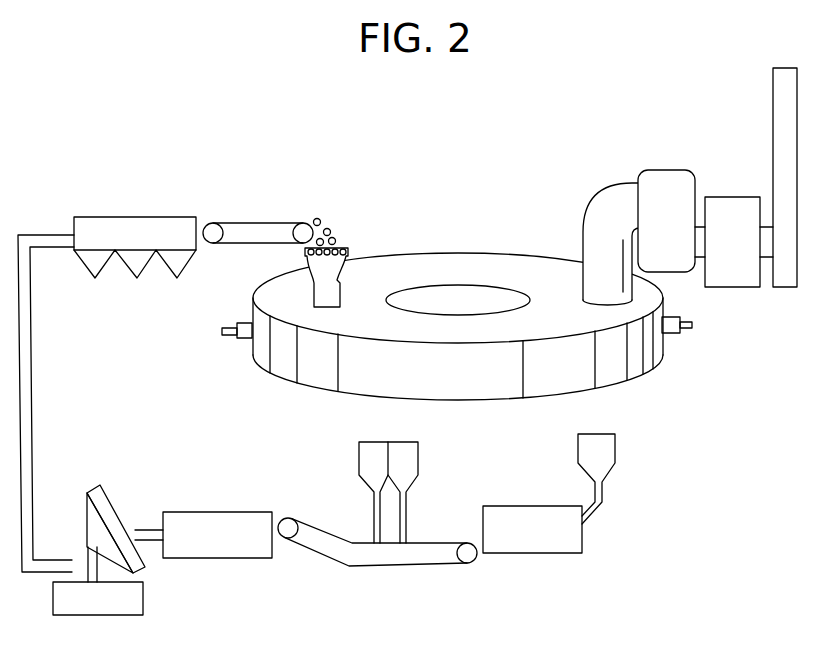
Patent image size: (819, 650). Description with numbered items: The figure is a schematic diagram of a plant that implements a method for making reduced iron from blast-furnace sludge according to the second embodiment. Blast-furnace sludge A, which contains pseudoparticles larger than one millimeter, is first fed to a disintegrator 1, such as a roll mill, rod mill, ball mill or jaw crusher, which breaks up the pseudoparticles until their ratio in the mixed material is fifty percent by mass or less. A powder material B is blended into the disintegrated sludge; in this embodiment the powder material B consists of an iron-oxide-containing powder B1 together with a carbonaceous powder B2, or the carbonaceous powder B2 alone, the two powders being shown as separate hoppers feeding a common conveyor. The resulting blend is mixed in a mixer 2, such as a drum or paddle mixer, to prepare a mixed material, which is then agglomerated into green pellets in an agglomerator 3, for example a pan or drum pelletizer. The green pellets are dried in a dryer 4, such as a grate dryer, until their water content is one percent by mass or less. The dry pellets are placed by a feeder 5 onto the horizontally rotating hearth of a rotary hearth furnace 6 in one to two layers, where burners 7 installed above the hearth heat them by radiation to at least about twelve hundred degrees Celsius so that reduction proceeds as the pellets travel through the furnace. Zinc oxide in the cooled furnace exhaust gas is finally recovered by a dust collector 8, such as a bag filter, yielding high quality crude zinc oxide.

The disintegrator 1 is at (557, 547).
The mixer 2 is at (248, 553).
The agglomerator 3 is at (137, 603).
The dryer 4 is at (160, 220).
The feeder 5 is at (350, 254).
The rotary hearth furnace 6 is at (476, 268).
The burners 7 is at (243, 326).
The dust collector 8 is at (736, 210).
The blast-furnace sludge A is at (608, 454).
The powder material B is at (424, 484).
The iron-oxide-containing powder B1 is at (372, 452).
The carbonaceous powder B2 is at (413, 460).